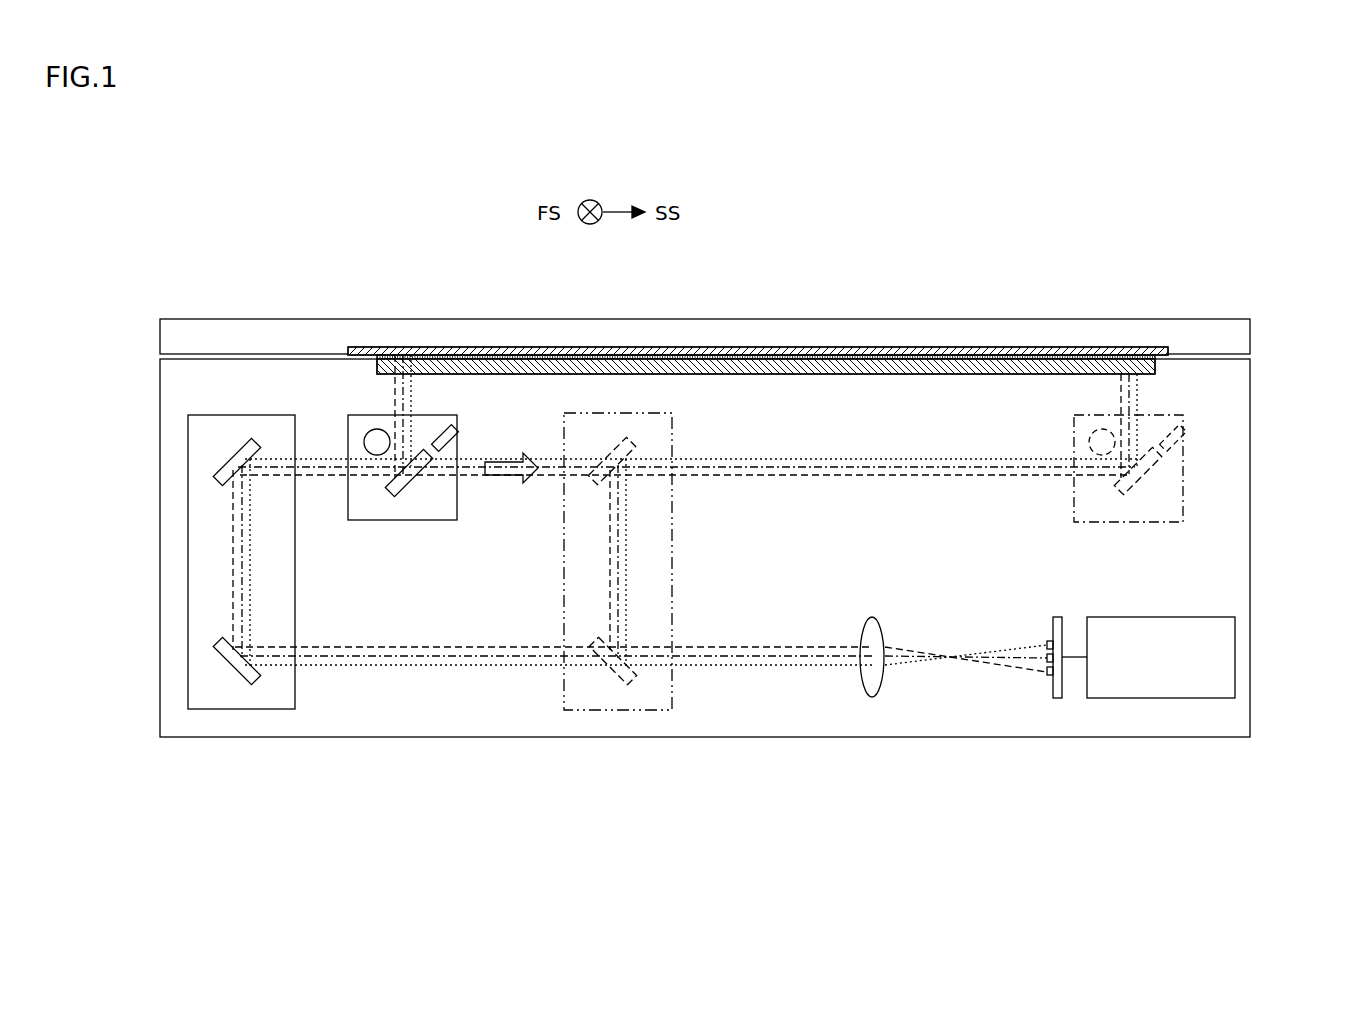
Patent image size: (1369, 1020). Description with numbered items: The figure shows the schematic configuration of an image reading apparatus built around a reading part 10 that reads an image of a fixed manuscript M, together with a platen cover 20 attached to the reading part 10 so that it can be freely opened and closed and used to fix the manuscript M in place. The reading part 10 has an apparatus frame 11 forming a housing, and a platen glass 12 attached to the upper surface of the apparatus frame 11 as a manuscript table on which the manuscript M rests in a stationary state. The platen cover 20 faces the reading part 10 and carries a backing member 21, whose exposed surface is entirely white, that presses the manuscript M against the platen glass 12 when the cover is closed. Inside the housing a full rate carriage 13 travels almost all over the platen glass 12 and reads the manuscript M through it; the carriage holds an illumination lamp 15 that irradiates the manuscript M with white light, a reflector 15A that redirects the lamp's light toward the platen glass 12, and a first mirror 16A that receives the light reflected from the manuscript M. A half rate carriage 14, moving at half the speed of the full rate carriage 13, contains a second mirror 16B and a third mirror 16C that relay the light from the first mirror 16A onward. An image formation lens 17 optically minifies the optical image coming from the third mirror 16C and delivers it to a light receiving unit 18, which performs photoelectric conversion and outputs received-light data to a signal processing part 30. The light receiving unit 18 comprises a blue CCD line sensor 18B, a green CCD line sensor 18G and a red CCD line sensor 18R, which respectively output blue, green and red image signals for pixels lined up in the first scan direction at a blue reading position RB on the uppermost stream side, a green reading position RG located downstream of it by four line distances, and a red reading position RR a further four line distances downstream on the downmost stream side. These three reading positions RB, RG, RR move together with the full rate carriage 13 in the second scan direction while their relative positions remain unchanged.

The reading part 10 is at (1276, 418).
The apparatus frame 11 is at (1250, 520).
The platen glass 12 is at (592, 361).
The full rate carriage 13 is at (457, 495).
The half rate carriage 14 is at (295, 685).
The illumination lamp 15 is at (372, 436).
The reflector 15A is at (452, 436).
The first mirror 16A is at (402, 482).
The second mirror 16B is at (213, 468).
The third mirror 16C is at (237, 672).
The image formation lens 17 is at (872, 697).
The light receiving unit 18 is at (1057, 698).
The red CCD line sensor 18R is at (1047, 643).
The green CCD line sensor 18G is at (1047, 657).
The blue CCD line sensor 18B is at (1047, 672).
The platen cover 20 is at (780, 319).
The backing member 21 is at (927, 348).
The signal processing part 30 is at (1235, 657).
The manuscript M is at (1048, 355).
The blue reading position RB is at (395, 353).
The green reading position RG is at (403, 353).
The red reading position RR is at (411, 353).